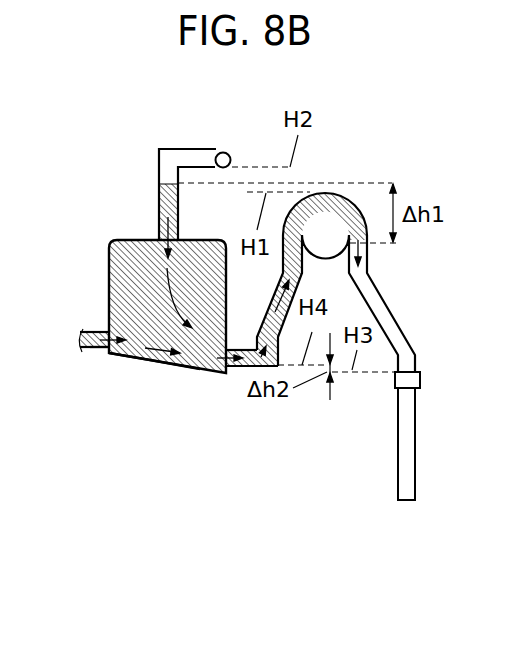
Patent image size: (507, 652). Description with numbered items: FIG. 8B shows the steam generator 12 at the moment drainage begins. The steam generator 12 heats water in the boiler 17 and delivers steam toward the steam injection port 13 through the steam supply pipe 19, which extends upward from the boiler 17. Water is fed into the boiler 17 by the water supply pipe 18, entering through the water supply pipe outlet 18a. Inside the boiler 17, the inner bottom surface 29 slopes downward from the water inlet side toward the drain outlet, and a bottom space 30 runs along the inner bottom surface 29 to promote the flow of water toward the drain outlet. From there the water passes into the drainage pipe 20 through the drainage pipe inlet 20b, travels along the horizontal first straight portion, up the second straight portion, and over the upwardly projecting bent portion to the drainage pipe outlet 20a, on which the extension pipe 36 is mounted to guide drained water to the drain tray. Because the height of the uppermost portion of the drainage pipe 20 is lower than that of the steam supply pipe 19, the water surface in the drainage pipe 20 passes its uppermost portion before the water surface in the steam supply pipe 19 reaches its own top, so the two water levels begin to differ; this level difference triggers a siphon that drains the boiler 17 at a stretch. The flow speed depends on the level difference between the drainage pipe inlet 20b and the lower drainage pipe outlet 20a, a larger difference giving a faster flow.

The steam generator 12 is at (128, 468).
The steam injection port 13 is at (224, 152).
The boiler 17 is at (208, 247).
The water supply pipe 18 is at (82, 333).
The water supply pipe outlet 18a is at (107, 348).
The steam supply pipe 19 is at (188, 158).
The drainage pipe 20 is at (389, 317).
The drainage pipe outlet 20a is at (400, 382).
The drainage pipe inlet 20b is at (220, 370).
The inner bottom surface 29 is at (142, 359).
The bottom space 30 is at (176, 366).
The extension pipe 36 is at (410, 440).